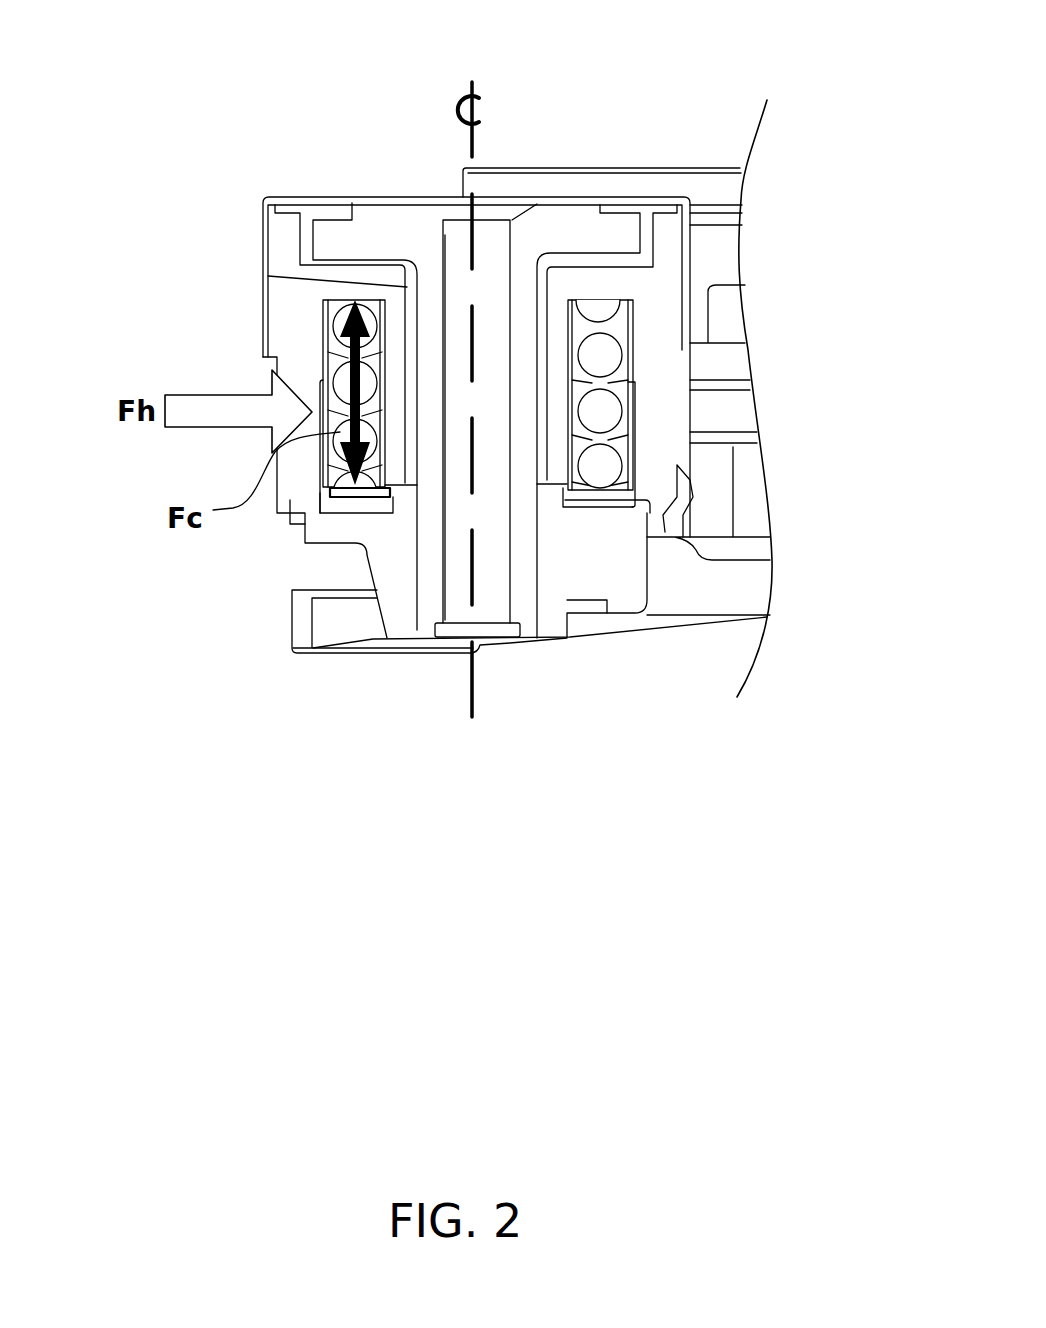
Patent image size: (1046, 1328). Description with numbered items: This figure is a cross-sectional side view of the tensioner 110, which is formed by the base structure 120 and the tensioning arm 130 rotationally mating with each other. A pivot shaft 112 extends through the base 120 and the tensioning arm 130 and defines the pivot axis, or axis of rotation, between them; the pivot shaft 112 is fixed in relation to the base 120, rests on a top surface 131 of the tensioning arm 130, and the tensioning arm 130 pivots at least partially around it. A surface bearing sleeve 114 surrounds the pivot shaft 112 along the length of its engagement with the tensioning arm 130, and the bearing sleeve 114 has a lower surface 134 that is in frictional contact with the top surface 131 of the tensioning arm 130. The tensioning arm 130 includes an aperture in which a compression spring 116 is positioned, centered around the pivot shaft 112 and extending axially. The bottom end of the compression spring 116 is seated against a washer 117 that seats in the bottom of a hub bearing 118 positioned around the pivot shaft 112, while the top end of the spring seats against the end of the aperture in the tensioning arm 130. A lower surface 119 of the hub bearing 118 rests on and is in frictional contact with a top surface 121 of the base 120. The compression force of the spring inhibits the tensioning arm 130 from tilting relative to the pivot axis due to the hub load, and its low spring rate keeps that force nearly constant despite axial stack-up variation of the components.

The tensioner 110 is at (160, 68).
The pivot shaft 112 is at (440, 243).
The surface bearing sleeve 114 is at (280, 277).
The compression spring 116 is at (333, 363).
The washer 117 is at (323, 493).
The hub bearing 118 is at (637, 423).
The lower surface 119 is at (597, 512).
The base structure 120 is at (367, 563).
The top surface 121 is at (600, 512).
The tensioning arm 130 is at (262, 233).
The top surface 131 is at (588, 266).
The lower surface 134 is at (612, 266).